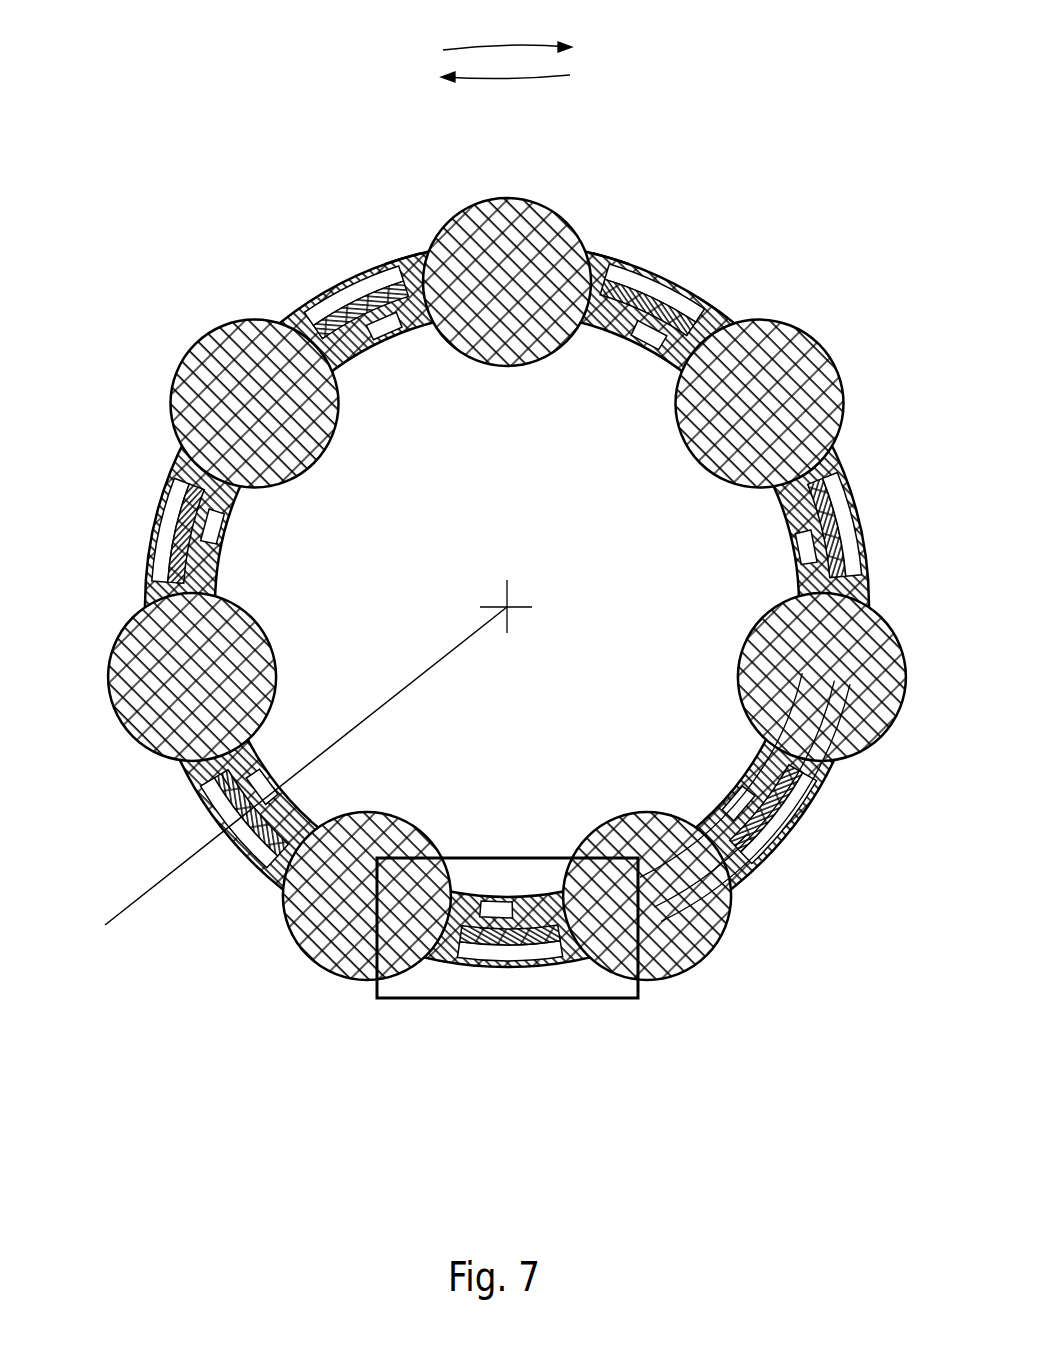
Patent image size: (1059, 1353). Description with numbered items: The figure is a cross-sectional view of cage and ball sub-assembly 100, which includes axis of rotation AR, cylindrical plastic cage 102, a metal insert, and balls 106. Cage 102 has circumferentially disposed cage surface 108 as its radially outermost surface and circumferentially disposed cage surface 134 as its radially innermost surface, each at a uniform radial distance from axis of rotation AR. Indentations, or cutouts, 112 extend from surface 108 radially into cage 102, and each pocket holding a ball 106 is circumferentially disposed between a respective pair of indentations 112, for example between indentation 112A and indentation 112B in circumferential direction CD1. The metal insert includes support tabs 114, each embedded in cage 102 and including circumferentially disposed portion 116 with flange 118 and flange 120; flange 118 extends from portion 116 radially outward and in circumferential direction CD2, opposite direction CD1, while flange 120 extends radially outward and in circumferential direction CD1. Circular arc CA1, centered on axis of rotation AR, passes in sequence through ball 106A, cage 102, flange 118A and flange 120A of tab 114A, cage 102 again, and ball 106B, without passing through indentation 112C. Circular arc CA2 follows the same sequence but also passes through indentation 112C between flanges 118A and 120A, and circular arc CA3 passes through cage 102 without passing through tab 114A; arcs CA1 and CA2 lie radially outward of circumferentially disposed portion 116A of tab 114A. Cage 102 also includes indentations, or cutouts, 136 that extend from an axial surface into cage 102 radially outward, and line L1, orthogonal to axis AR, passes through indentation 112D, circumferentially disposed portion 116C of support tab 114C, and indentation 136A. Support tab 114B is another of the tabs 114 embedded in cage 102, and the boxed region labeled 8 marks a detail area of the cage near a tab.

The cage and ball sub-assembly 100 is at (514, 541).
The cylindrical plastic cage 102 is at (297, 303).
The balls 106 is at (185, 350).
The ball 106A is at (870, 757).
The ball 106B is at (717, 947).
The circumferentially disposed cage surface 108 is at (400, 250).
The indentations 112 is at (353, 283).
The indentation 112A is at (660, 287).
The indentation 112B is at (850, 527).
The indentation 112C is at (797, 837).
The indentation 112D is at (233, 837).
The support tabs 114 is at (845, 470).
The support tab 114A is at (780, 770).
The support tab 114B is at (522, 953).
The support tab 114C is at (252, 785).
The circumferentially disposed portion 116 is at (638, 283).
The circumferentially disposed portion 116A is at (753, 800).
The circumferentially disposed portion 116C is at (227, 810).
The flange 118 is at (603, 257).
The flange 118A is at (793, 747).
The flange 120 is at (708, 306).
The flange 120A is at (720, 820).
The circumferentially disposed cage surface 134 is at (433, 327).
The indentations 136 is at (388, 347).
The indentation 136A is at (283, 800).
The circumferential direction CD1 is at (515, 43).
The circumferential direction CD2 is at (543, 78).
The axis of rotation AR is at (507, 607).
The line L1 is at (153, 890).
The circular arc CA1 is at (873, 723).
The circular arc CA2 is at (733, 893).
The circular arc CA3 is at (660, 913).
The detail view FIG. 8 is at (423, 998).